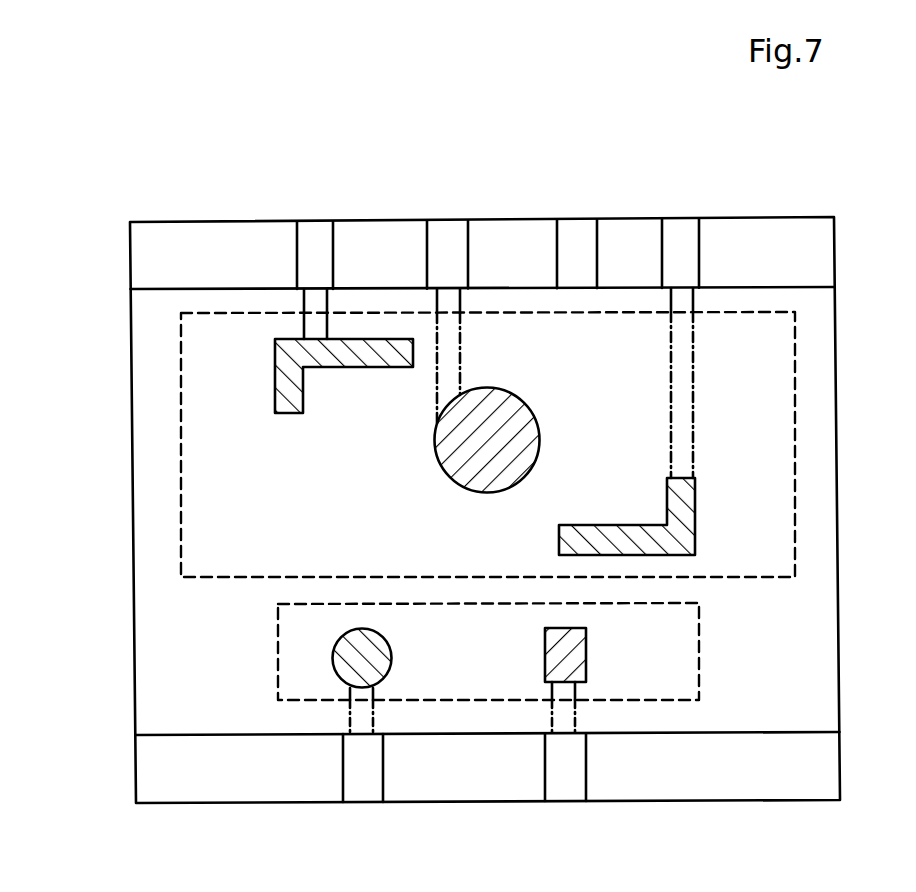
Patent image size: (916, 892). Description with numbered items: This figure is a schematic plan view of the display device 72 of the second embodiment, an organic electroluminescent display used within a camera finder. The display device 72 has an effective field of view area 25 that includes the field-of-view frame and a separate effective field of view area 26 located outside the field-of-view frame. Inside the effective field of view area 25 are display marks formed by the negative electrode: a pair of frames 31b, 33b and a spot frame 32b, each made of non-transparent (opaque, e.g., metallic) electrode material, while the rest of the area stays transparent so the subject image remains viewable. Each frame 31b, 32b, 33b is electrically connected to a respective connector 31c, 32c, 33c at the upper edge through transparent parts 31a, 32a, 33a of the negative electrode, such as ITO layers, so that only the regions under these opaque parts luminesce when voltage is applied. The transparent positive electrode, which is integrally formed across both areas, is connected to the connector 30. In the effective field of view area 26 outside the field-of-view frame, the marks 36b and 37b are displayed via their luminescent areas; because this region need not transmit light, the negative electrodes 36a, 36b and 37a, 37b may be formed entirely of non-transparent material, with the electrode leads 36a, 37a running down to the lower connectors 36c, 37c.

The display device 72 is at (857, 288).
The effective field of view area 25 is at (181, 462).
The effective field of view area 26 is at (278, 648).
The connector 30 is at (580, 235).
The transparent part of the negative electrode 31a is at (304, 327).
The frame 31b is at (275, 392).
The connector 31c is at (316, 235).
The transparent part of the negative electrode 32a is at (440, 368).
The spot frame 32b is at (540, 428).
The connector 32c is at (450, 235).
The transparent part of the negative electrode 33a is at (695, 347).
The frame 33b is at (622, 525).
The connector 33c is at (684, 235).
The negative electrode 36a is at (375, 718).
The mark 36b is at (392, 642).
The terminal tab 36c is at (370, 765).
The negative electrode 37a is at (577, 720).
The mark 37b is at (587, 655).
The terminal tab 37c is at (572, 770).